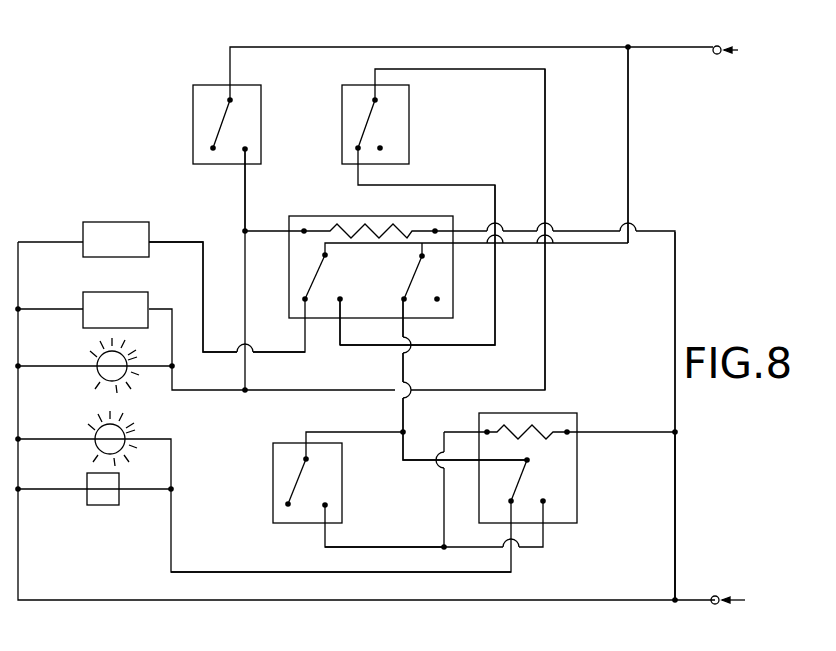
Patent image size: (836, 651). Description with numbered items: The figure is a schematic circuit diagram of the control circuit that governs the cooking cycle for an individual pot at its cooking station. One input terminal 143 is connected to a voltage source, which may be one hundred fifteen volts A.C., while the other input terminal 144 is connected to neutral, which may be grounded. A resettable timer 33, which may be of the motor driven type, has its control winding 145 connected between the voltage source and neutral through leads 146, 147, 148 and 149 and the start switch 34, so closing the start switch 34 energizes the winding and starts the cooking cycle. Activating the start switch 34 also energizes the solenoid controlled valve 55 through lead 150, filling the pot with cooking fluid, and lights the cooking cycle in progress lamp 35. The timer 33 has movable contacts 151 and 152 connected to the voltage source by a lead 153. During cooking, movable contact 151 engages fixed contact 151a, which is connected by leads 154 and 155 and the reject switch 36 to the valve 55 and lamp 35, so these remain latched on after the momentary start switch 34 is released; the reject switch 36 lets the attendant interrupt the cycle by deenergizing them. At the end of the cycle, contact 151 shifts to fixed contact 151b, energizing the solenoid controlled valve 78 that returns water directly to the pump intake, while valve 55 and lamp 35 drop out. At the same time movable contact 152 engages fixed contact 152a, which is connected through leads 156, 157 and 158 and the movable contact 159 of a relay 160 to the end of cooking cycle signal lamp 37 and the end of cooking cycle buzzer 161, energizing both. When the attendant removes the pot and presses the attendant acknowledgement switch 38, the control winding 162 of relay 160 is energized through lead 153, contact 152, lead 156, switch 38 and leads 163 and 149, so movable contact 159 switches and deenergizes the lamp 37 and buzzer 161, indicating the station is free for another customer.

The resettable timer 33 is at (315, 212).
The start switch 34 is at (192, 106).
The cooking cycle in progress lamp 35 is at (98, 380).
The reject switch 36 is at (410, 106).
The end of cooking cycle signal lamp 37 is at (96, 452).
The attendant acknowledgement switch 38 is at (272, 470).
The solenoid controlled valve 55 is at (110, 292).
The solenoid controlled valve 78 is at (113, 222).
The input terminal 143 is at (717, 46).
The input terminal 144 is at (716, 604).
The control winding 145 is at (375, 231).
The lead 146 is at (417, 47).
The lead 147 is at (244, 190).
The lead 148 is at (676, 276).
The lead 149 is at (676, 512).
The lead 150 is at (245, 288).
The movable contact 151 is at (316, 275).
The fixed contact 151a is at (337, 304).
The fixed contact 151b is at (304, 303).
The movable contact 152 is at (417, 270).
The fixed contact 152a is at (402, 304).
The lead 153 is at (629, 136).
The lead 154 is at (448, 347).
The lead 155 is at (546, 295).
The lead 156 is at (402, 367).
The lead 157 is at (419, 463).
The lead 158 is at (206, 572).
The movable contact 159 is at (524, 478).
The relay 160 is at (578, 502).
The end of cooking cycle buzzer 161 is at (95, 505).
The control winding 162 is at (540, 432).
The lead 163 is at (410, 546).